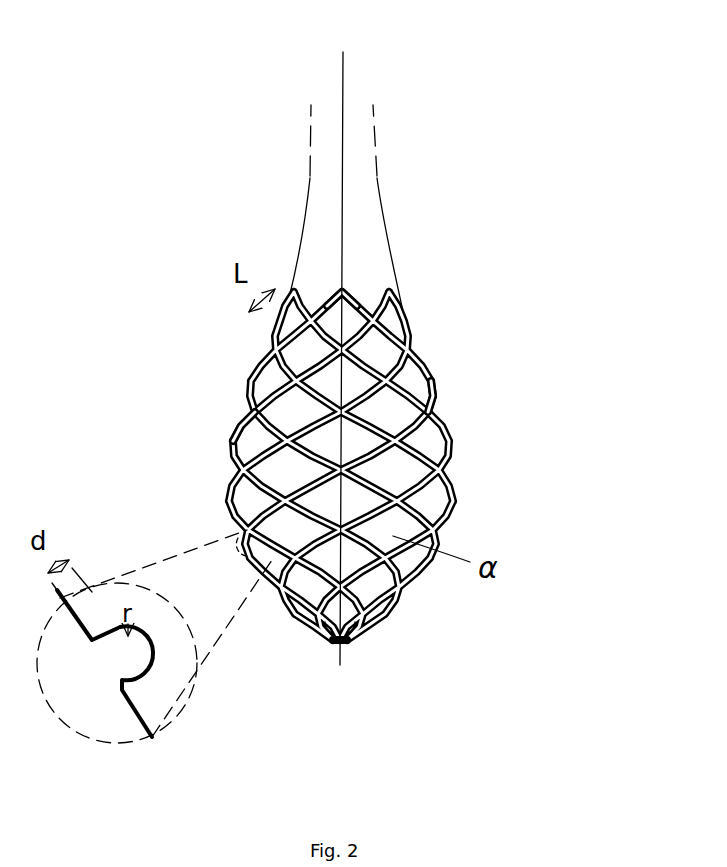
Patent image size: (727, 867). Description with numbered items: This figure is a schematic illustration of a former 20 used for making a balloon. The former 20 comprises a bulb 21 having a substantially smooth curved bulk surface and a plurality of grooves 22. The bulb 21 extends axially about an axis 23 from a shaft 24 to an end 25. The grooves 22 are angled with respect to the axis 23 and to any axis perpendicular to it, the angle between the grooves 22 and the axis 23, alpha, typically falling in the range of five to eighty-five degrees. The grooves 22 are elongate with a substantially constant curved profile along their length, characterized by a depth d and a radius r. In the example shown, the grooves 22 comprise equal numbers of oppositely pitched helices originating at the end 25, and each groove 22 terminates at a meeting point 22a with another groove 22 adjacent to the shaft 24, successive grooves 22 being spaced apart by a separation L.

The former 20 is at (319, 401).
The bulb 21 is at (400, 469).
The grooves 22 is at (240, 395).
The meeting point 22a is at (348, 293).
The axis 23 is at (348, 62).
The shaft 24 is at (390, 217).
The end 25 is at (344, 641).